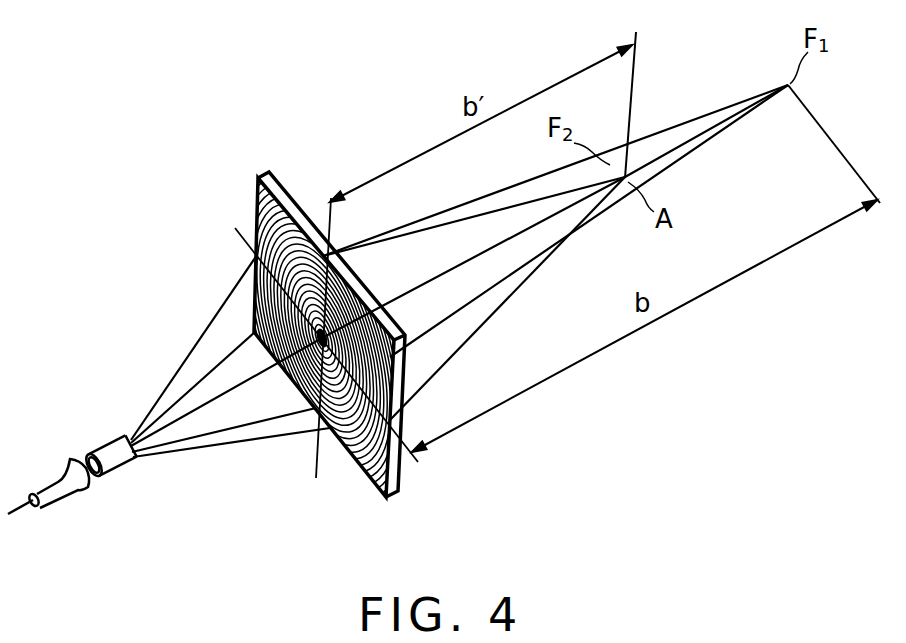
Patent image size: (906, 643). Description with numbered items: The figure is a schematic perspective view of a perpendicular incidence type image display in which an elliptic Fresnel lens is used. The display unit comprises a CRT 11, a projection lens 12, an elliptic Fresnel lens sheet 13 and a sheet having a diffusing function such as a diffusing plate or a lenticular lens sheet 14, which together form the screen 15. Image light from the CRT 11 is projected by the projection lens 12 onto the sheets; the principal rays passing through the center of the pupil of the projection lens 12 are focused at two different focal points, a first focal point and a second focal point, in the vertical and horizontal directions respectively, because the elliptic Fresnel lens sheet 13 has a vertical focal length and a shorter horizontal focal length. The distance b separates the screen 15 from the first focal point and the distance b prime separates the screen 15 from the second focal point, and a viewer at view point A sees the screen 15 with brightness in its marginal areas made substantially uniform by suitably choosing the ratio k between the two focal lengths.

The CRT 11 is at (54, 482).
The projection lens 12 is at (110, 441).
The elliptic Fresnel lens sheet 13 is at (380, 488).
The lenticular lens sheet 14 is at (399, 488).
The screen 15 is at (257, 179).